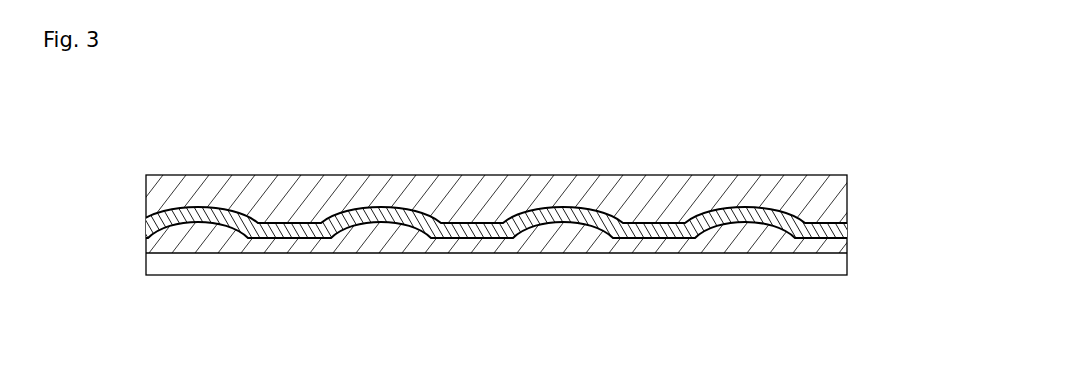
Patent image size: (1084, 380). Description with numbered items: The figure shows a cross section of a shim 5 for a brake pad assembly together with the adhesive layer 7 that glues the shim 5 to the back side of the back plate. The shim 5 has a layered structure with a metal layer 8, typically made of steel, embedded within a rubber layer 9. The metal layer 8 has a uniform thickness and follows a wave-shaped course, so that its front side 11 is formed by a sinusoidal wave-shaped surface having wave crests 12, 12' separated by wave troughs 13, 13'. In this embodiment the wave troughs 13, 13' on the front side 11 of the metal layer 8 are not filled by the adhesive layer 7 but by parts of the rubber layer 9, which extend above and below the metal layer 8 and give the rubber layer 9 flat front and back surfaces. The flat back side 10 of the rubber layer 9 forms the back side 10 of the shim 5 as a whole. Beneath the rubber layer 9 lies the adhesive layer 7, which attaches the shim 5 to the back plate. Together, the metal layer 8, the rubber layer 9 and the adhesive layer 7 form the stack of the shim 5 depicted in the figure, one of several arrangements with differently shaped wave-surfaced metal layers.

The back side of the rubber layer 10 is at (507, 175).
The shim 5 is at (921, 188).
The rubber layer 9 is at (847, 188).
The metal layer 8 is at (847, 232).
The adhesive layer 7 is at (800, 267).
The front side of the metal layer 11 is at (705, 227).
The wave crest 12 is at (289, 279).
The wave trough 13 is at (381, 271).
The wave crest 12' is at (472, 279).
The wave trough 13' is at (563, 271).